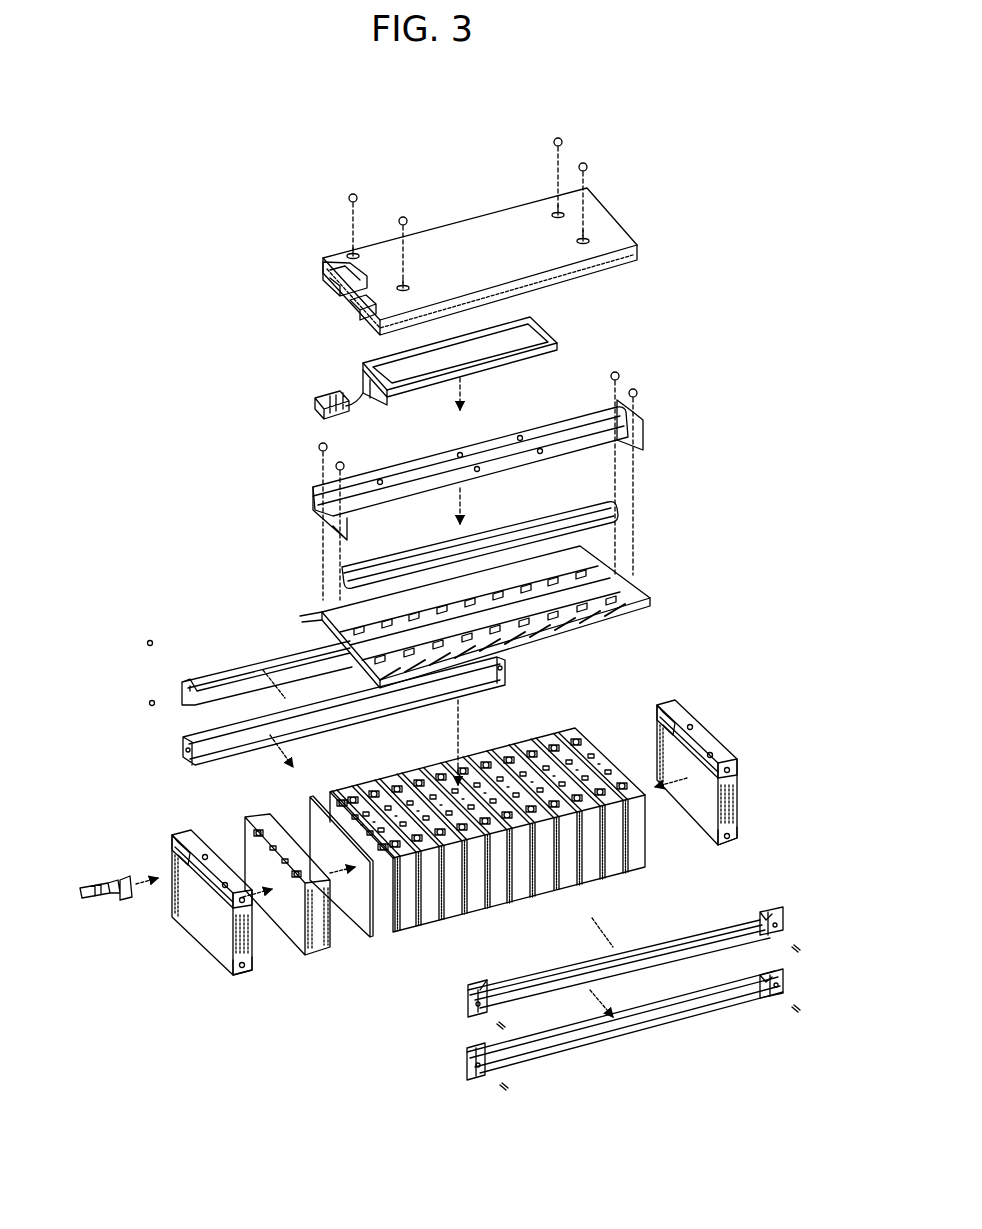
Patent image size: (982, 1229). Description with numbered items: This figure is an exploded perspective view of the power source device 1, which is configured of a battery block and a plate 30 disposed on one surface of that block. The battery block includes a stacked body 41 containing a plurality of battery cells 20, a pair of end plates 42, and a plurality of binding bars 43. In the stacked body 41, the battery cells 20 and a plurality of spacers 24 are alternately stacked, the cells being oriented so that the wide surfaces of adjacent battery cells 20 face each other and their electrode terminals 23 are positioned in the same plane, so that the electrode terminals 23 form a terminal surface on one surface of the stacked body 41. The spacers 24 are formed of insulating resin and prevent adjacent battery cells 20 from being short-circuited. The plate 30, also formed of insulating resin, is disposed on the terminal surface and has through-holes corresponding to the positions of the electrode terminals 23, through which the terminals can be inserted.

The power source device 1 is at (183, 211).
The battery cell 20 is at (298, 930).
The electrode terminal 23 is at (533, 742).
The spacer 24 is at (363, 917).
The plate 30 is at (313, 615).
The stacked body 41 is at (650, 883).
The end plate 42 is at (205, 937).
The binding bar 43 is at (180, 692).